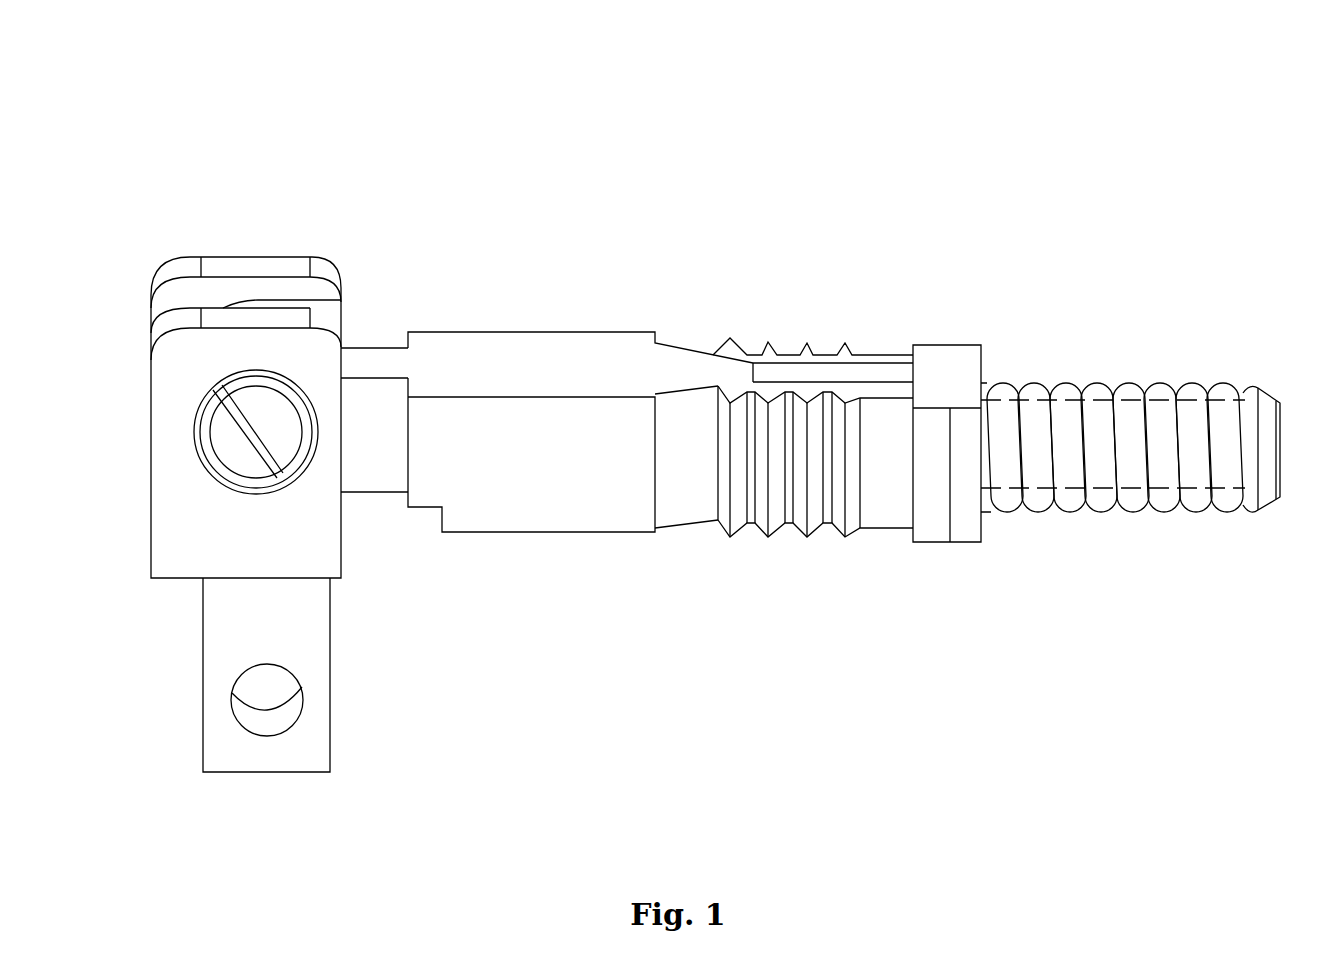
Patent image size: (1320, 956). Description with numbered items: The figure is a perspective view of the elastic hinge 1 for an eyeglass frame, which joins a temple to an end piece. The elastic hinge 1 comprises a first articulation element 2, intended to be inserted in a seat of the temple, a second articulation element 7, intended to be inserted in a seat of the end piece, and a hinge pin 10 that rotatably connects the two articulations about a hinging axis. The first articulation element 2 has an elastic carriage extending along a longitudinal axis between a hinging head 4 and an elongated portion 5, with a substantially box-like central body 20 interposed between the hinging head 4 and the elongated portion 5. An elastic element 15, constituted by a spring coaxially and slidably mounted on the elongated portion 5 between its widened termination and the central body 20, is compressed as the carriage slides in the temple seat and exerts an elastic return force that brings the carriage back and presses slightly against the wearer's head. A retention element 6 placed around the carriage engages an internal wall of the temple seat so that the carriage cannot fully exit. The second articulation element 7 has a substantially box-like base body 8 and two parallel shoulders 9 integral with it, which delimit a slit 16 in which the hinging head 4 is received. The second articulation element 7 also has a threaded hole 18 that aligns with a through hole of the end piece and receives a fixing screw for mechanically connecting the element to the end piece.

The elastic hinge 1 is at (1243, 121).
The first articulation element 2 is at (660, 617).
The hinging head 4 is at (372, 362).
The elongated portion 5 is at (1103, 398).
The retention element 6 is at (882, 330).
The second articulation element 7 is at (420, 644).
The base body 8 is at (308, 752).
The shoulders 9 is at (173, 552).
The hinge pin 10 is at (212, 467).
The elastic element 15 is at (1200, 393).
The slit 16 is at (216, 300).
The threaded hole 18 is at (247, 742).
The central body 20 is at (558, 357).